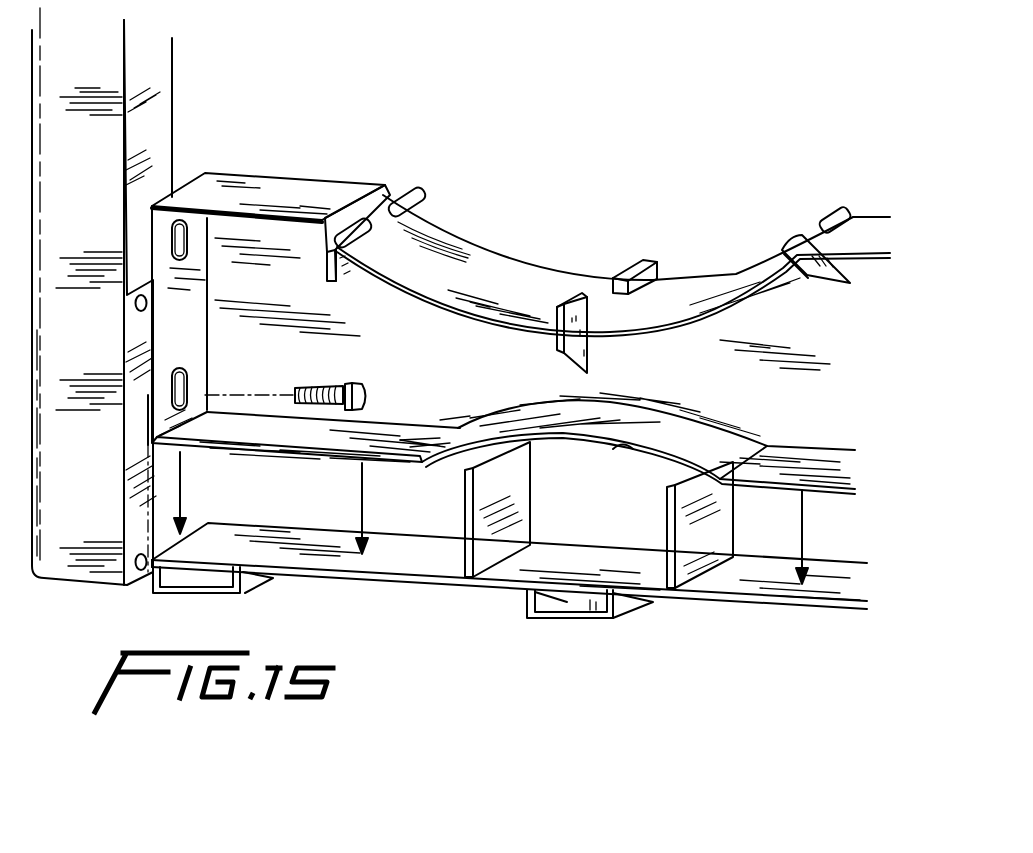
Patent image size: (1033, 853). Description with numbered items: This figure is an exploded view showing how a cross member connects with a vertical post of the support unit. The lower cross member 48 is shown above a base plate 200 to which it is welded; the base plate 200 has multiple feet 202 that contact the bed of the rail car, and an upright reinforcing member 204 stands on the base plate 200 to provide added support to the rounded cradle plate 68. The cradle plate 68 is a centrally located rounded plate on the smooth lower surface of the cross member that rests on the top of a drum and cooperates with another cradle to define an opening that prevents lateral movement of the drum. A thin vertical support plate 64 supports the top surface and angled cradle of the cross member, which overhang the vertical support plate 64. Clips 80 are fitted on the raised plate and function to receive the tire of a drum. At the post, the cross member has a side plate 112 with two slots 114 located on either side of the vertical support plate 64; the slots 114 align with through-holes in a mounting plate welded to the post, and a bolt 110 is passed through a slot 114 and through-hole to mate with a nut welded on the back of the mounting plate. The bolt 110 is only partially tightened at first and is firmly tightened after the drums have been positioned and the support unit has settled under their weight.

The lower cross member 48 is at (874, 213).
The vertical support plate 64 is at (380, 307).
The rounded cradle plate 68 is at (637, 458).
The clip 80 is at (623, 267).
The bolt 110 is at (370, 397).
The side plate 112 is at (193, 270).
The slot 114 is at (181, 380).
The base plate 200 is at (434, 584).
The foot 202 is at (223, 597).
The upright reinforcing member 204 is at (667, 543).